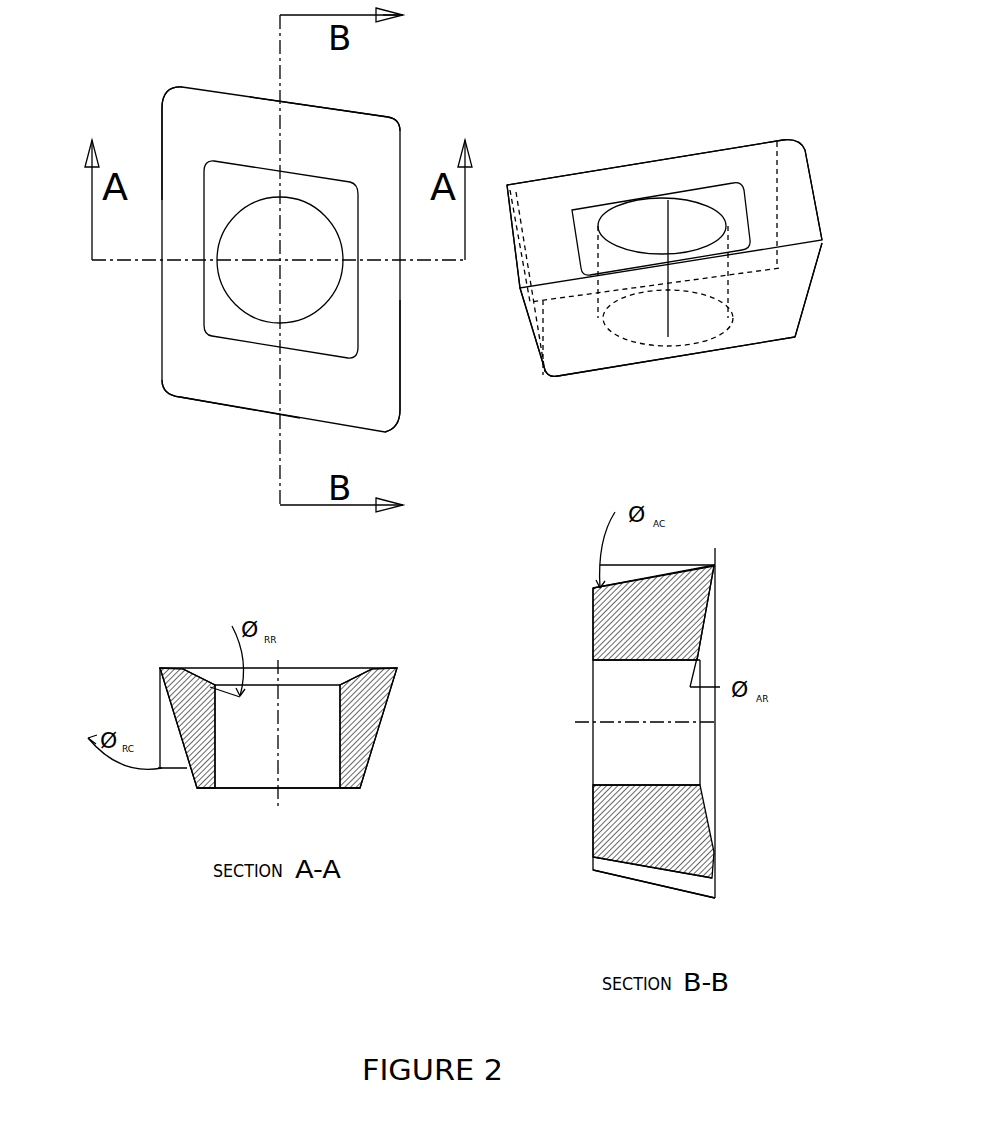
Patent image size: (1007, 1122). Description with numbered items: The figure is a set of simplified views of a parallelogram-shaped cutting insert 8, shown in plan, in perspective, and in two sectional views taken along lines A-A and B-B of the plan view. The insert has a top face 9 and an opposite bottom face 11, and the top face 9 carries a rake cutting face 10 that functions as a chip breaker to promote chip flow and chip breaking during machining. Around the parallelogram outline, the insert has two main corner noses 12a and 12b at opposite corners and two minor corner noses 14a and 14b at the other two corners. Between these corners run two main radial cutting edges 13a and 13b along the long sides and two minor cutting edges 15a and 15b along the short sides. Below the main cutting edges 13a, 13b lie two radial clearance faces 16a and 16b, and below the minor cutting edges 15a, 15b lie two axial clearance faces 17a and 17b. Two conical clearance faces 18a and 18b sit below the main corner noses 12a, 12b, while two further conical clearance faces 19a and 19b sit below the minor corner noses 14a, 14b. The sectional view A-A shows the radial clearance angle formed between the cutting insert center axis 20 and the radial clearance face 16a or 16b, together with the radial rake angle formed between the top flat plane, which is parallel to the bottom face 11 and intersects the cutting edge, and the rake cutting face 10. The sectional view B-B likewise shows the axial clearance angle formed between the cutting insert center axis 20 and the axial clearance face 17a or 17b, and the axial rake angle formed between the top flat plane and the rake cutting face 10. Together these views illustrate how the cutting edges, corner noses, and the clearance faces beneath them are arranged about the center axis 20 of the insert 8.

The parallelogram-shaped cutting insert 8 is at (642, 132).
The top face 9 is at (195, 363).
The rake cutting face 10 is at (367, 677).
The bottom face 11 is at (593, 787).
The main corner nose 12a is at (165, 92).
The main corner nose 12b is at (380, 433).
The main radial cutting edge 13a is at (160, 187).
The main radial cutting edge 13b is at (400, 373).
The minor corner nose 14a is at (400, 123).
The minor corner nose 14b is at (162, 393).
The minor cutting edge 15a is at (313, 103).
The minor cutting edge 15b is at (235, 412).
The radial clearance face 16a is at (762, 302).
The radial clearance face 16b is at (712, 170).
The axial clearance face 17a is at (808, 218).
The axial clearance face 17b is at (528, 303).
The conical clearance face 18a is at (543, 320).
The conical clearance face 18b is at (788, 182).
The conical clearance face 19a is at (808, 295).
The conical clearance face 19b is at (503, 187).
The cutting insert center axis 20 is at (273, 760).